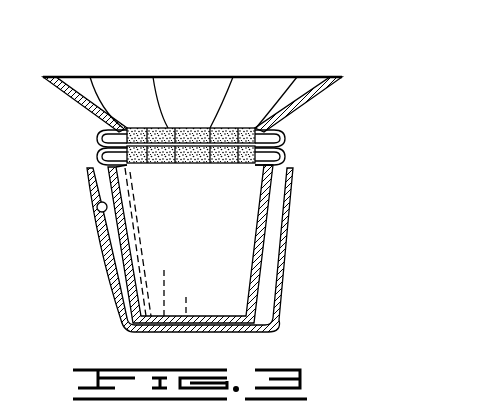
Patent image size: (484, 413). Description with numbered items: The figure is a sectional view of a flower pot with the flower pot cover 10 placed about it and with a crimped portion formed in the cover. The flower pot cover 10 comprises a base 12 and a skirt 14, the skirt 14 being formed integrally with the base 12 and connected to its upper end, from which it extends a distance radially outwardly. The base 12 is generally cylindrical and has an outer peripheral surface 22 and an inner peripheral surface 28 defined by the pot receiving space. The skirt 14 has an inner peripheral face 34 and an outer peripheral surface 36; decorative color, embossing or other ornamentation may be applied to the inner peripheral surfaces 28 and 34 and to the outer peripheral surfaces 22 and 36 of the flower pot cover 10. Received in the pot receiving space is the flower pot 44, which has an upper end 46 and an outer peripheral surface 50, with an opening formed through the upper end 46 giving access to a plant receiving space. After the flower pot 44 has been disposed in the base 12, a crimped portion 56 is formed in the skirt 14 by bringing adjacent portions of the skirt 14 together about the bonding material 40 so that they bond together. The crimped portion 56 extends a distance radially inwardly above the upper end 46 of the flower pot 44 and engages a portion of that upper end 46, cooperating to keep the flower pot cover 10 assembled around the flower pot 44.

The flower pot cover 10 is at (209, 179).
The base 12 is at (195, 244).
The skirt 14 is at (206, 86).
The outer peripheral surface 22 is at (180, 250).
The inner peripheral surface 28 is at (97, 212).
The inner peripheral face 34 is at (67, 82).
The outer peripheral surface 36 is at (78, 118).
The bonding material 40 is at (188, 133).
The flower pot 44 is at (123, 226).
The upper end 46 is at (113, 163).
The outer peripheral surface 50 is at (118, 247).
The crimped portion 56 is at (128, 118).